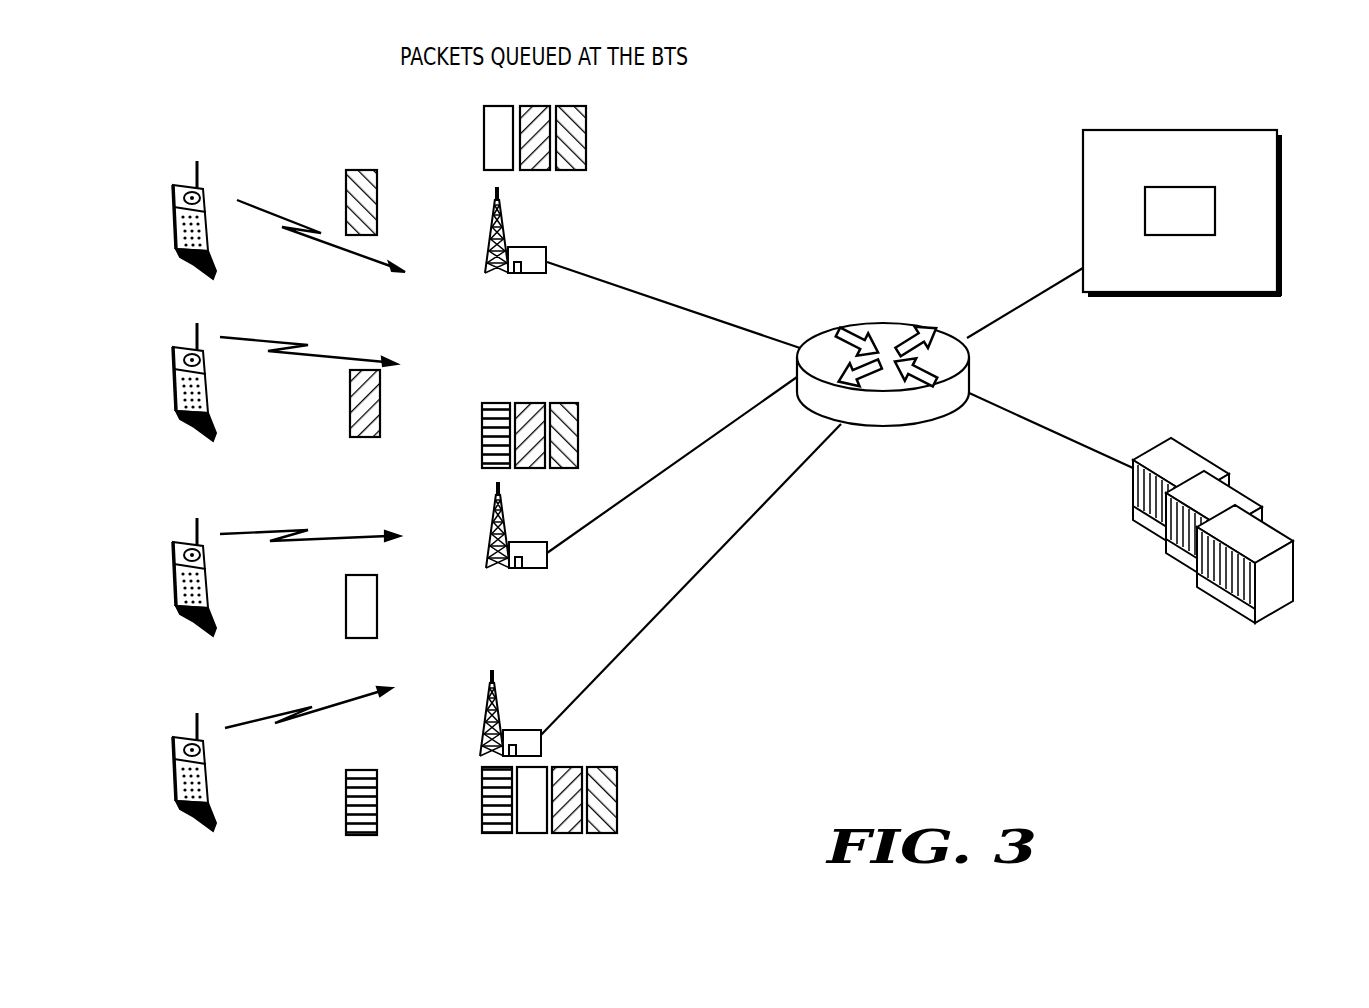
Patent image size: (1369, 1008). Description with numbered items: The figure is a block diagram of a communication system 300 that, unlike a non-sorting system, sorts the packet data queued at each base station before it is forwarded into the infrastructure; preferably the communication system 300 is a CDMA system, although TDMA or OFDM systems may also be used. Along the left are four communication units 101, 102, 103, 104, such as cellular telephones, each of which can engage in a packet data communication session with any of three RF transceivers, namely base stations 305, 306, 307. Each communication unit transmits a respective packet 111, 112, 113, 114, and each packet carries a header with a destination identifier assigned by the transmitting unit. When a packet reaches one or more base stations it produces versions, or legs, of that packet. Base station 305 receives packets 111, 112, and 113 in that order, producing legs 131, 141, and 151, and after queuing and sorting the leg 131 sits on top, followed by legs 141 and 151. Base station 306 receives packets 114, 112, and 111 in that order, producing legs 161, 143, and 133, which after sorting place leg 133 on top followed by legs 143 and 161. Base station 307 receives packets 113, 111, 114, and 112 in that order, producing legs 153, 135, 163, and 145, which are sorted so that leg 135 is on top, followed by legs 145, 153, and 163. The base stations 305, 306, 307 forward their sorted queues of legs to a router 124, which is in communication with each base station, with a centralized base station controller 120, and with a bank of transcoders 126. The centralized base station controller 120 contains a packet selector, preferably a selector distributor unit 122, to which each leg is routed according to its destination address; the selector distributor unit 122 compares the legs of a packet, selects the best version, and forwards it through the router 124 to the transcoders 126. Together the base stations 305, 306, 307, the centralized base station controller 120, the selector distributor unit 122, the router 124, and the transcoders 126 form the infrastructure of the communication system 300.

The communication unit 101 is at (174, 190).
The communication unit 102 is at (174, 351).
The communication unit 103 is at (174, 548).
The communication unit 104 is at (174, 743).
The packet 111 is at (282, 218).
The packet 112 is at (283, 343).
The packet 113 is at (278, 532).
The packet 114 is at (285, 724).
The centralized base station controller 120 is at (1182, 198).
The selector distributor unit 122 is at (1176, 187).
The router 124 is at (880, 323).
The transcoders 126 is at (1286, 627).
The packet leg 131 is at (569, 106).
The packet leg 133 is at (565, 403).
The packet leg 135 is at (601, 833).
The packet leg 141 is at (534, 106).
The packet leg 143 is at (530, 403).
The packet leg 145 is at (566, 833).
The packet leg 151 is at (497, 106).
The packet leg 153 is at (531, 833).
The packet leg 161 is at (496, 403).
The packet leg 163 is at (496, 833).
The communication system 300 is at (405, 904).
The base station 305 is at (491, 240).
The base station 306 is at (492, 532).
The base station 307 is at (487, 725).